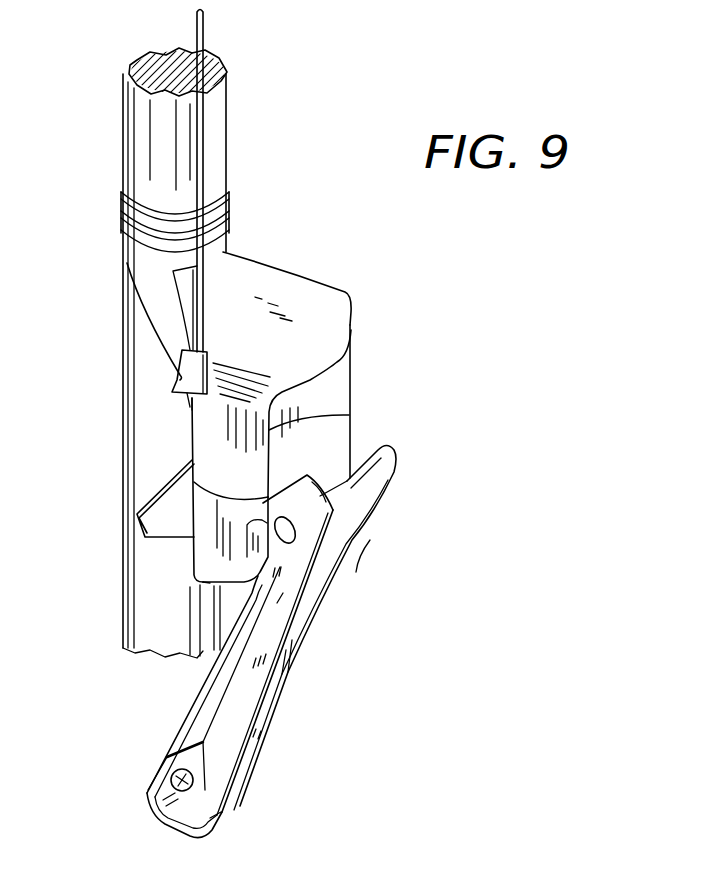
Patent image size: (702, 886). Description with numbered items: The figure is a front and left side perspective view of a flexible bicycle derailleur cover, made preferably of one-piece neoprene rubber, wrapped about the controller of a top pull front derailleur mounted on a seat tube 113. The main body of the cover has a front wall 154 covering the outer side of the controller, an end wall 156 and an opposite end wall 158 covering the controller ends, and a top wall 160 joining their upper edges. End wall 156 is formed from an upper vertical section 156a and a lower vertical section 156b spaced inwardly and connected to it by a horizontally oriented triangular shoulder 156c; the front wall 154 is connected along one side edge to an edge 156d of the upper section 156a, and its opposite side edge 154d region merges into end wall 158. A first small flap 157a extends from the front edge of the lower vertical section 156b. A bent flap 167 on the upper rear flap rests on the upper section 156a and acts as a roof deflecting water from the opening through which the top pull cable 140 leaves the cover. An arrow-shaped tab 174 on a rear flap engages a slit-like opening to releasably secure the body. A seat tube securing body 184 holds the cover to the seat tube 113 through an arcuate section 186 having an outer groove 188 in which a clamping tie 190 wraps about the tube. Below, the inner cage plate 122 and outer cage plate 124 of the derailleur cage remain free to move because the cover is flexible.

The seat tube 113 is at (143, 58).
The top pull cable 140 is at (204, 28).
The seat tube securing body 184 is at (160, 235).
The clamping tie 190 is at (122, 205).
The outer groove 188 is at (122, 238).
The arcuate section 186 is at (127, 263).
The bent flap 167 is at (182, 379).
The end wall 158 is at (265, 262).
The top wall 160 is at (339, 350).
The housing side wall 154d is at (355, 345).
The front wall 154 is at (340, 386).
The edge of upper section 156d is at (350, 415).
The end wall 156 is at (141, 490).
The upper vertical section 156a is at (190, 412).
The triangular shoulder 156c is at (141, 604).
The lower vertical section 156b is at (196, 570).
The tab 174 is at (157, 500).
The first small flap 157a is at (267, 557).
The outer cage plate 124 is at (221, 642).
The inner cage plate 122 is at (183, 733).